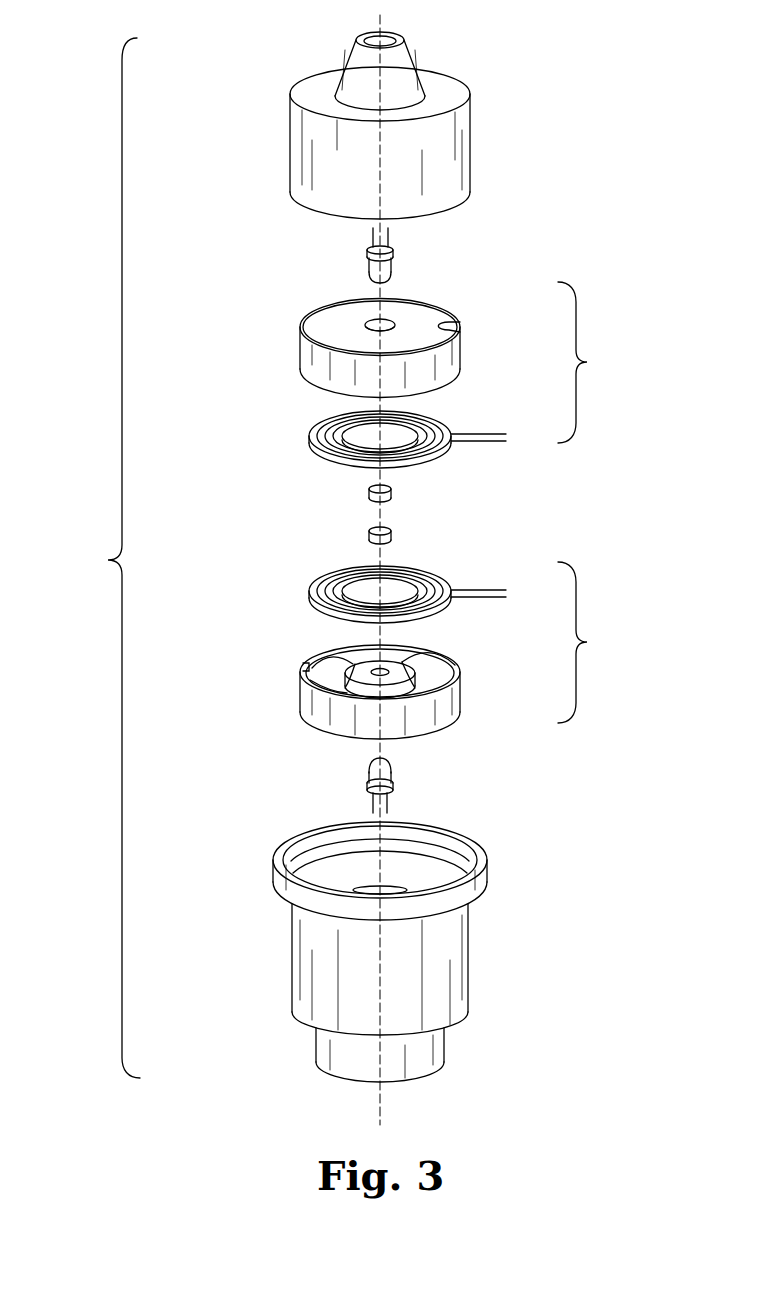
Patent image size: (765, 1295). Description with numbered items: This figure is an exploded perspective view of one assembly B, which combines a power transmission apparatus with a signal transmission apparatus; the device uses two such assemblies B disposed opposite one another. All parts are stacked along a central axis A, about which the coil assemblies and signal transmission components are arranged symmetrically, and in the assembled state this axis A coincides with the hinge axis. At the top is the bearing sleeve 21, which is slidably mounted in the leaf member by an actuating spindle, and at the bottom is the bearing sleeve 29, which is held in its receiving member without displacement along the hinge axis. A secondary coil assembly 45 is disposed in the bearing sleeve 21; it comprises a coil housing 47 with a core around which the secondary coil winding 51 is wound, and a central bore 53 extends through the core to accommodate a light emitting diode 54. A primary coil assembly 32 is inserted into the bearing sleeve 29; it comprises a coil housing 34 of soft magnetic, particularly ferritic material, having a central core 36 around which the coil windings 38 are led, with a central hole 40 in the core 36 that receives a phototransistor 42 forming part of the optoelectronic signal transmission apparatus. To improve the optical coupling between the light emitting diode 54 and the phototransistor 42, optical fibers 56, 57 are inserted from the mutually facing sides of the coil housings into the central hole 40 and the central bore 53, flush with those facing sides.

The bearing sleeve 21 is at (437, 172).
The bearing sleeve 29 is at (440, 968).
The primary coil assembly 32 is at (590, 642).
The coil housing 34 is at (430, 712).
The central core 36 is at (350, 668).
The coil windings 38 is at (330, 608).
The central hole 40 is at (388, 671).
The phototransistor 42 is at (393, 778).
The secondary coil assembly 45 is at (590, 362).
The coil housing 47 is at (340, 327).
The secondary coil winding 51 is at (328, 453).
The central bore 53 is at (377, 320).
The light emitting diode 54 is at (383, 265).
The optical fiber 56 is at (392, 493).
The optical fiber 57 is at (392, 535).
The central axis A is at (383, 1115).
The assembly B is at (108, 560).